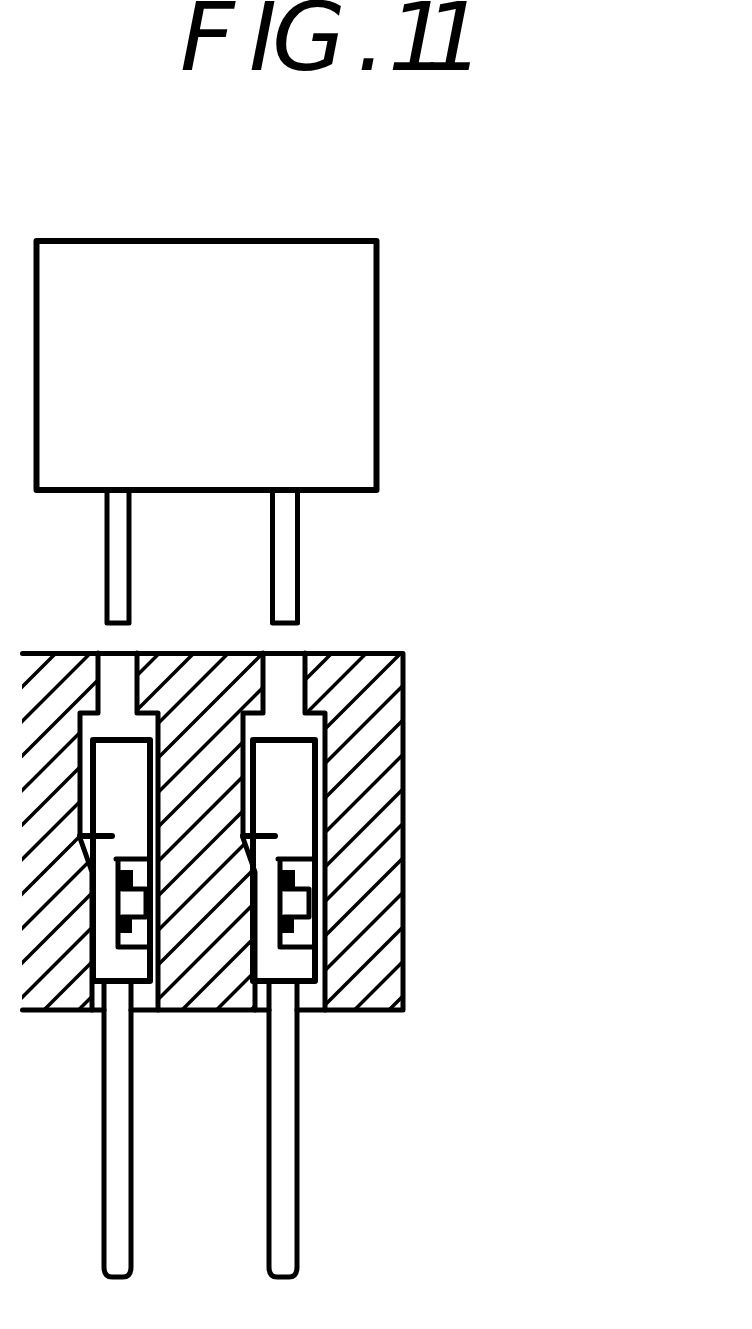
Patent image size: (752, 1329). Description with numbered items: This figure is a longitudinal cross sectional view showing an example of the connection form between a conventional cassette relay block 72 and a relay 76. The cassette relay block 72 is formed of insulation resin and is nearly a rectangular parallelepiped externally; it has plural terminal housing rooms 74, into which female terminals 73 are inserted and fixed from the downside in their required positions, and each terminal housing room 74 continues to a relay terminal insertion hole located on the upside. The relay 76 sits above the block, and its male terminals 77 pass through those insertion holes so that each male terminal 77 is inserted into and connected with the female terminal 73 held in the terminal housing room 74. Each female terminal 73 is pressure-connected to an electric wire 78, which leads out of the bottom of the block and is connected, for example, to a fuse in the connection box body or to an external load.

The cassette relay block 72 is at (450, 704).
The female terminal 73 is at (300, 837).
The terminal housing room 74 is at (300, 781).
The relay 76 is at (377, 365).
The male terminal 77 is at (298, 563).
The electric wire 78 is at (285, 1170).